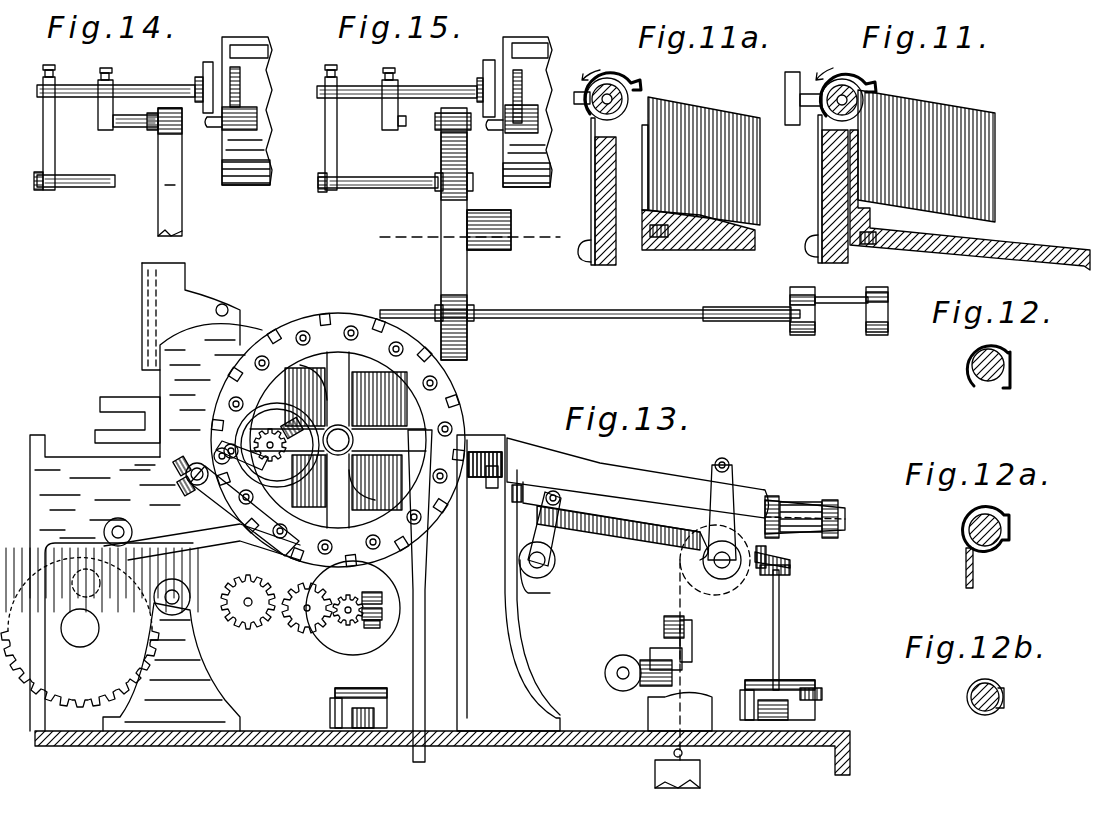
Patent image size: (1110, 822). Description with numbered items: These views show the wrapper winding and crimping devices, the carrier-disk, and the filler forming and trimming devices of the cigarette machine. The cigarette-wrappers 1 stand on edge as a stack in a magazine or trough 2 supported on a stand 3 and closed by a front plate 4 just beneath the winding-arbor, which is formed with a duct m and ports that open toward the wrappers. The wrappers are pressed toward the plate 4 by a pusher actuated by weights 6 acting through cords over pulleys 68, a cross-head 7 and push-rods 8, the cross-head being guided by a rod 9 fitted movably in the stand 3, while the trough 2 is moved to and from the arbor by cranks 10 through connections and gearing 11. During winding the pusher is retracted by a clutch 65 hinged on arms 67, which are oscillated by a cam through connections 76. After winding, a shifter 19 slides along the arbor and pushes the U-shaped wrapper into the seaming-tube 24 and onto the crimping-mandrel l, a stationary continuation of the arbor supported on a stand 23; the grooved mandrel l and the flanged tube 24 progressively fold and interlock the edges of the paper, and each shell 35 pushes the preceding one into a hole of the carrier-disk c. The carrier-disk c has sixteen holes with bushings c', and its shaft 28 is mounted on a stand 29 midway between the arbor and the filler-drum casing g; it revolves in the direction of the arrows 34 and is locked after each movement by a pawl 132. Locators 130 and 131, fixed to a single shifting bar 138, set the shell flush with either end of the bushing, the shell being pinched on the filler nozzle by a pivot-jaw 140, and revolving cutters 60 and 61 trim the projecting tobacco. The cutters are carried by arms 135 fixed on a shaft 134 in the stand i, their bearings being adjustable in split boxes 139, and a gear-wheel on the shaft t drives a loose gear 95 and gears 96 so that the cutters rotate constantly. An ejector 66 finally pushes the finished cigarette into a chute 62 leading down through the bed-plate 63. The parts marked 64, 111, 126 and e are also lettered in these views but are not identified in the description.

In FIG. 11A, the cigarette-wrappers 1 is at (698, 106).
In FIG. 11, the cigarette-wrappers 1 is at (972, 108).
In FIG. 12, the cigarette-wrappers 1 is at (1012, 354).
In FIG. 11A, the magazine or trough 2 is at (728, 246).
In FIG. 11, the magazine or trough 2 is at (1046, 246).
In FIG. 13, the magazine or trough 2 is at (648, 472).
In FIG. 13, the stand 3 is at (648, 536).
In FIG. 11A, the front plate 4 is at (648, 178).
In FIG. 13, the weights 6 is at (705, 772).
In FIG. 13, the cross-head 7 is at (834, 504).
In FIG. 13, the push-rods 8 is at (804, 504).
In FIG. 13, the rod 9 is at (806, 560).
In FIG. 13, the cranks 10 is at (555, 542).
In FIG. 13, the connections and gearing 11 is at (692, 648).
In FIG. 11, the shifter 19 is at (824, 112).
In FIG. 13, the stand 23 is at (467, 566).
In FIG. 11, the seaming-tube 24 is at (870, 82).
In FIG. 12, the seaming-tube 24 is at (960, 364).
In FIG. 12A, the seaming-tube 24 is at (970, 513).
In FIG. 13, the shaft 28 is at (338, 440).
In FIG. 13, the stand 29 is at (372, 496).
In FIG. 13, the arrows 34 is at (302, 302).
In FIG. 15, the shell 35 is at (413, 183).
In FIG. 12B, the shell 35 is at (966, 700).
In FIG. 13, the revolving cutter 60 is at (294, 456).
In FIG. 13, the revolving cutter 61 is at (353, 608).
In FIG. 13, the chute 62 is at (428, 650).
In FIG. 13, the bed-plate 63 is at (280, 746).
In FIG. 11, the bar 64 is at (822, 184).
In FIG. 12A, the bar 64 is at (966, 572).
In FIG. 11A, the clutch 65 is at (612, 252).
In FIG. 11, the clutch 65 is at (850, 255).
In FIG. 15, the ejector 66 is at (555, 318).
In FIG. 13, the arms 67 is at (740, 472).
In FIG. 13, the pulleys 68 is at (730, 596).
In FIG. 13, the connections 76 is at (782, 638).
In FIG. 13, the loose gear 95 is at (244, 628).
In FIG. 13, the gears 96 is at (312, 632).
In FIG. 13, the bracket 111 is at (130, 397).
In FIG. 15, the bracket 126 is at (538, 43).
In FIG. 14, the locator 130 is at (113, 118).
In FIG. 15, the locator 130 is at (396, 120).
In FIG. 13, the locator 130 is at (214, 450).
In FIG. 14, the locator 131 is at (74, 193).
In FIG. 15, the locator 131 is at (370, 170).
In FIG. 13, the locator 131 is at (300, 542).
In FIG. 13, the pawl 132 is at (202, 546).
In FIG. 13, the shaft 134 is at (167, 600).
In FIG. 13, the arms 135 is at (352, 595).
In FIG. 14, the shifting bar 138 is at (151, 85).
In FIG. 15, the shifting bar 138 is at (437, 78).
In FIG. 13, the shifting bar 138 is at (186, 474).
In FIG. 13, the split boxes 139 is at (366, 628).
In FIG. 14, the pivot-jaw 140 is at (209, 62).
In FIG. 14, the carrier-disk c is at (179, 172).
In FIG. 15, the carrier-disk c is at (470, 234).
In FIG. 13, the carrier-disk c is at (479, 429).
In FIG. 15, the bushings c' is at (469, 327).
In FIG. 13, the bushings c' is at (474, 403).
In FIG. 11, the roller e is at (848, 78).
In FIG. 14, the filler-drum casing g is at (254, 183).
In FIG. 15, the filler-drum casing g is at (545, 148).
In FIG. 13, the filler-drum casing g is at (202, 360).
In FIG. 13, the stand i is at (215, 700).
In FIG. 12, the crimping-mandrel l is at (987, 380).
In FIG. 12A, the crimping-mandrel l is at (988, 552).
In FIG. 11A, the duct m is at (611, 97).
In FIG. 13, the shaft t is at (80, 632).